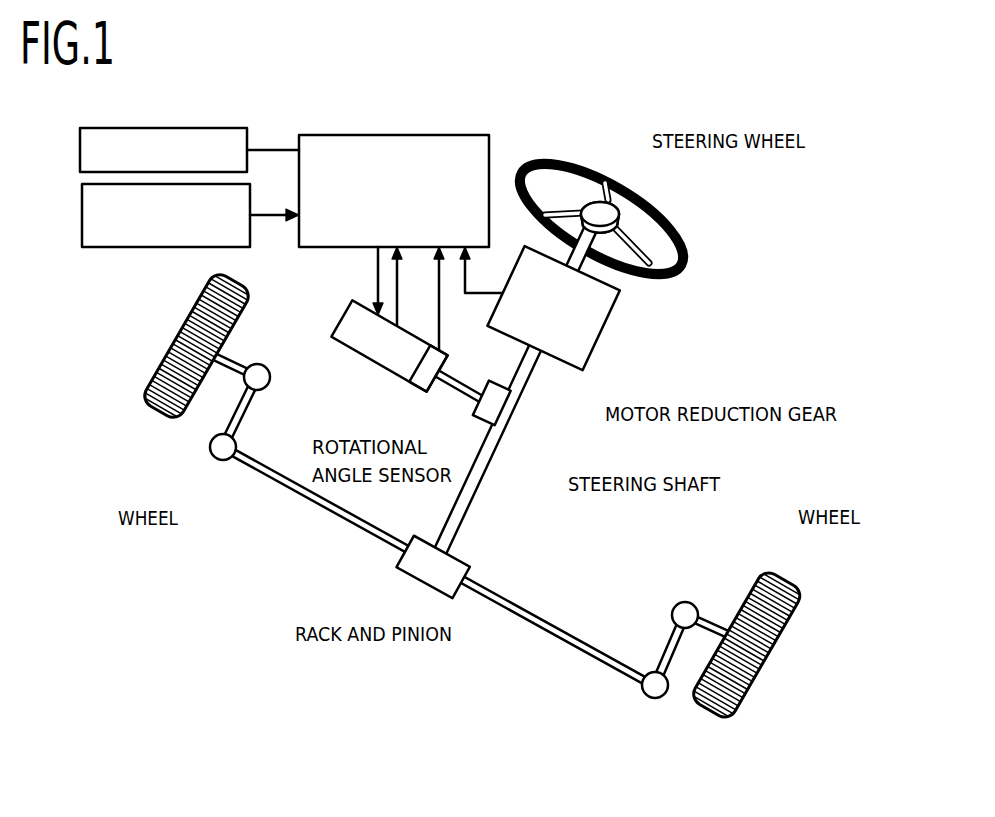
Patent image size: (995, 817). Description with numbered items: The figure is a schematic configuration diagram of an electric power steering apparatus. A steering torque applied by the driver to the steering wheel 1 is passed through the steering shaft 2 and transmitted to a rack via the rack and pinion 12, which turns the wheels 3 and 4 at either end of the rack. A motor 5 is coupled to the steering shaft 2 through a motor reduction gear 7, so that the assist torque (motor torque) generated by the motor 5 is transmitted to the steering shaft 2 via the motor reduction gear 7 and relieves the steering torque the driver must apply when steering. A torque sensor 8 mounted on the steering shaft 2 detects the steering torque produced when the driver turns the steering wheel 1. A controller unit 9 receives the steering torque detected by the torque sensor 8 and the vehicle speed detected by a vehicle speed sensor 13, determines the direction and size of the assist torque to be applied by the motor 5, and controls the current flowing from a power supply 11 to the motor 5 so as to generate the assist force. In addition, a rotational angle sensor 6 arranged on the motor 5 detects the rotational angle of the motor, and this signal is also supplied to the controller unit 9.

The steering wheel 1 is at (553, 158).
The steering shaft 2 is at (482, 481).
The wheel 3 is at (770, 572).
The wheel 4 is at (157, 412).
The motor 5 is at (352, 353).
The rotational angle sensor 6 is at (420, 384).
The motor reduction gear 7 is at (488, 404).
The torque sensor 8 is at (610, 317).
The controller unit 9 is at (363, 135).
The power supply 11 is at (170, 128).
The rack and pinion 12 is at (423, 577).
The vehicle speed sensor 13 is at (128, 250).